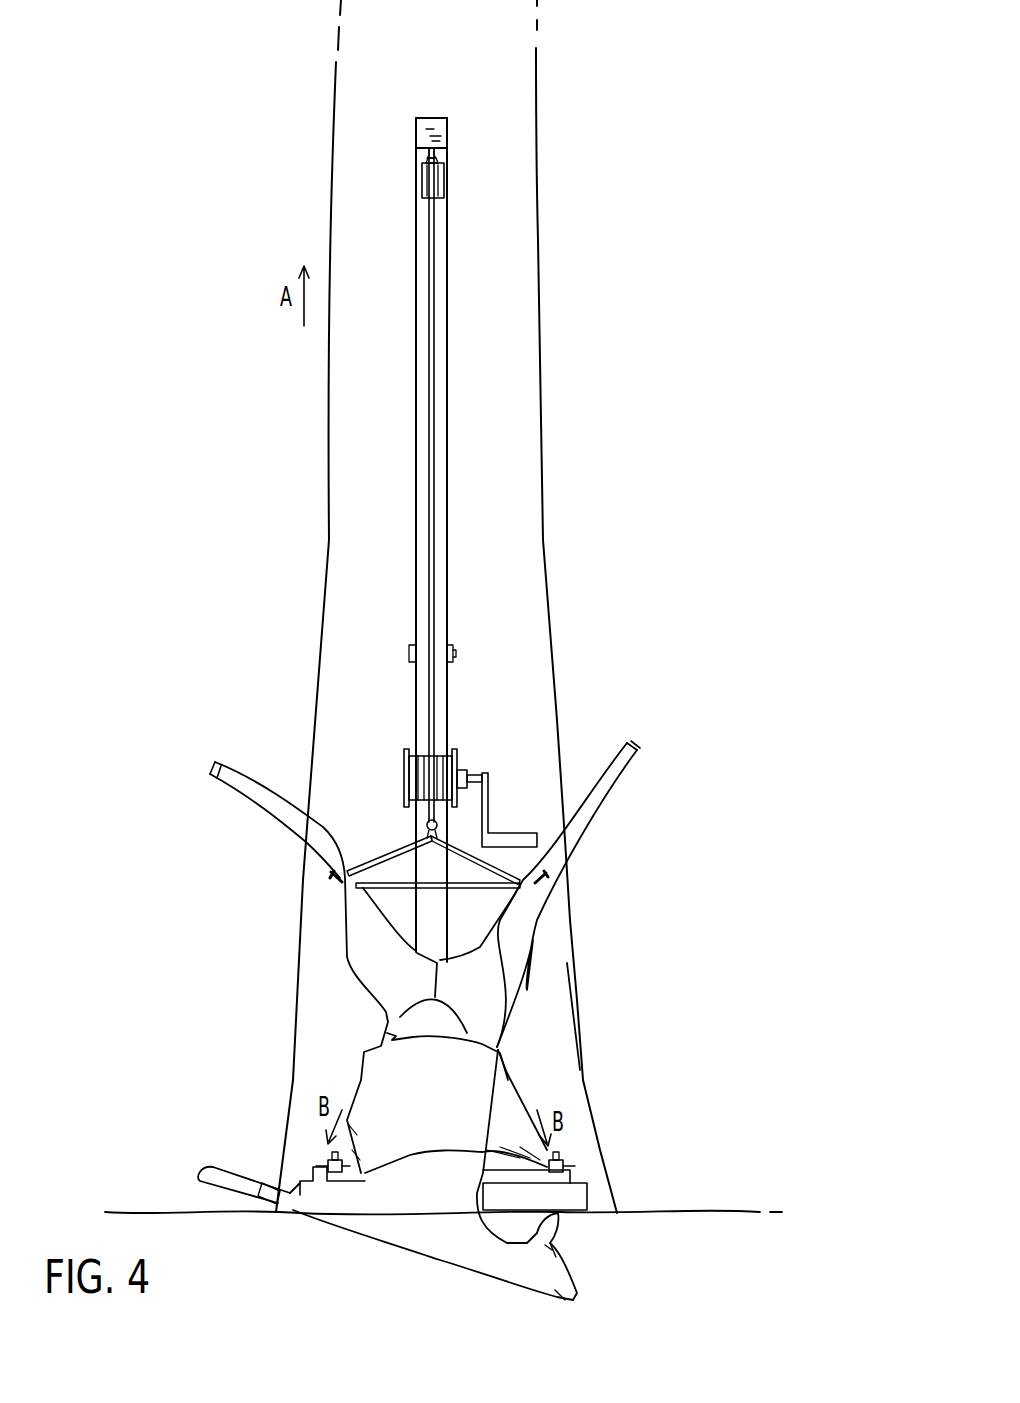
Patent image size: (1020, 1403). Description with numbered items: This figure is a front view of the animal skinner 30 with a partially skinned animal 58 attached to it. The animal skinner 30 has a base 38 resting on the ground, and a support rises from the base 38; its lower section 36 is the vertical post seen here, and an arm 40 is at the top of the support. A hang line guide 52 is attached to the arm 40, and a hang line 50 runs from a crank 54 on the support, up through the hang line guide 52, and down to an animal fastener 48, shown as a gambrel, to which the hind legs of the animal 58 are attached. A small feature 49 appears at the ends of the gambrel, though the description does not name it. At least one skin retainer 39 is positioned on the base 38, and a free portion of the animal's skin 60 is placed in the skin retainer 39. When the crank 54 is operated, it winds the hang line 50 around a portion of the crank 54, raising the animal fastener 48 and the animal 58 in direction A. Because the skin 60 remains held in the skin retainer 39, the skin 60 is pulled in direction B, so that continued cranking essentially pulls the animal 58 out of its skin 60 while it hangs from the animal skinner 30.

The animal skinner 30 is at (269, 175).
The lower section 36 is at (460, 620).
The base 38 is at (572, 1195).
The skin retainer 39 is at (563, 1167).
The arm 40 is at (437, 125).
The animal fastener 48 is at (385, 848).
The hook 49 is at (548, 884).
The hang line 50 is at (436, 492).
The hang line guide 52 is at (440, 182).
The crank 54 is at (452, 778).
The animal 58 is at (367, 957).
The animal's skin 60 is at (507, 1103).